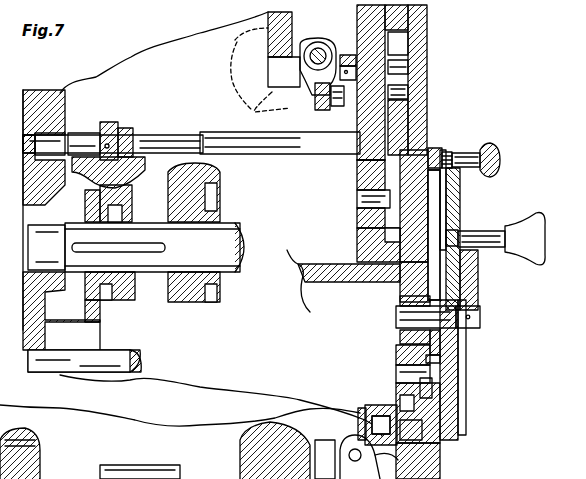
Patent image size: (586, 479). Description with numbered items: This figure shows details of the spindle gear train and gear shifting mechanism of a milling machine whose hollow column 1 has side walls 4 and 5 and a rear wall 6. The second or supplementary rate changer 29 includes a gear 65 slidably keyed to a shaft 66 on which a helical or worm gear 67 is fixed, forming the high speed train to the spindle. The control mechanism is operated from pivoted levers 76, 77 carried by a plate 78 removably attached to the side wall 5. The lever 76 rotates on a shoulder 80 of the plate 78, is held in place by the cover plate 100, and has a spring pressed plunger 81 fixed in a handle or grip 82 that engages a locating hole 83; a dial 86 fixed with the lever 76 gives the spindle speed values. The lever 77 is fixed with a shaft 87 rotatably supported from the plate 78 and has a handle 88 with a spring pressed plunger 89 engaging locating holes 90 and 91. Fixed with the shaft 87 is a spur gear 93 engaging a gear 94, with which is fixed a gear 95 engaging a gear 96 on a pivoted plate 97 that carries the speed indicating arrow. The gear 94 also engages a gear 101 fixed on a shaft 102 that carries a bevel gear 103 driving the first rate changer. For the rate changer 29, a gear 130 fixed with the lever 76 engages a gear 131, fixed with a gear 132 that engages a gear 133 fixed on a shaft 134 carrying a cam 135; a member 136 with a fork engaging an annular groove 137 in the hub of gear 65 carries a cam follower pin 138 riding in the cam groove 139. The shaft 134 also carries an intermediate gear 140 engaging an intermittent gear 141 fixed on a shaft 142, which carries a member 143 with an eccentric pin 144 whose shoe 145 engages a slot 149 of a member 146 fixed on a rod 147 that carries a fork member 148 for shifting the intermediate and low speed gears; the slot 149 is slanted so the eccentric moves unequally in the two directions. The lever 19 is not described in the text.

The hollow column 1 is at (72, 92).
The side wall 4 is at (35, 302).
The side wall 5 is at (420, 40).
The rear wall 6 is at (57, 478).
The lever 19 is at (368, 460).
The second or supplementary rate changer 29 is at (160, 214).
The gear 65 is at (100, 302).
The shaft 66 is at (232, 268).
The helical or worm gear 67 is at (218, 191).
The pivoted lever 76 is at (460, 198).
The pivoted lever 77 is at (478, 272).
The plate 78 is at (440, 462).
The shoulder 80 is at (410, 278).
The spring pressed plunger 81 is at (450, 152).
The handle or grip 82 is at (497, 160).
The locating hole 83 is at (434, 148).
The dial 86 is at (462, 436).
The shaft 87 is at (480, 318).
The handle 88 is at (536, 226).
The spring pressed plunger 89 is at (460, 236).
The locating hole 90 is at (395, 250).
The locating hole 91 is at (440, 378).
The spur gear 93 is at (404, 334).
The gear 94 is at (420, 328).
The gear 95 is at (430, 368).
The gear 96 is at (442, 343).
The pivoted plate 97 is at (440, 360).
The cover plate 100 is at (440, 384).
The gear 101 is at (430, 432).
The shaft 102 is at (392, 410).
The bevel gear 103 is at (363, 410).
The gear 130 is at (386, 235).
The gear 131 is at (450, 184).
The gear 132 is at (358, 220).
The gear 133 is at (415, 98).
The shaft 134 is at (328, 158).
The cam 135 is at (112, 126).
The member 136 is at (128, 178).
The annular groove 137 is at (115, 290).
The cam follower pin 138 is at (98, 180).
The cam groove 139 is at (150, 137).
The intermediate gear 140 is at (358, 186).
The intermittent gear 141 is at (417, 82).
The shaft 142 is at (427, 17).
The member 143 is at (344, 55).
The eccentric pin 144 is at (282, 143).
The shoe 145 is at (320, 98).
The member 146 is at (300, 86).
The rod 147 is at (318, 42).
The fork member 148 is at (245, 60).
The slot 149 is at (340, 106).